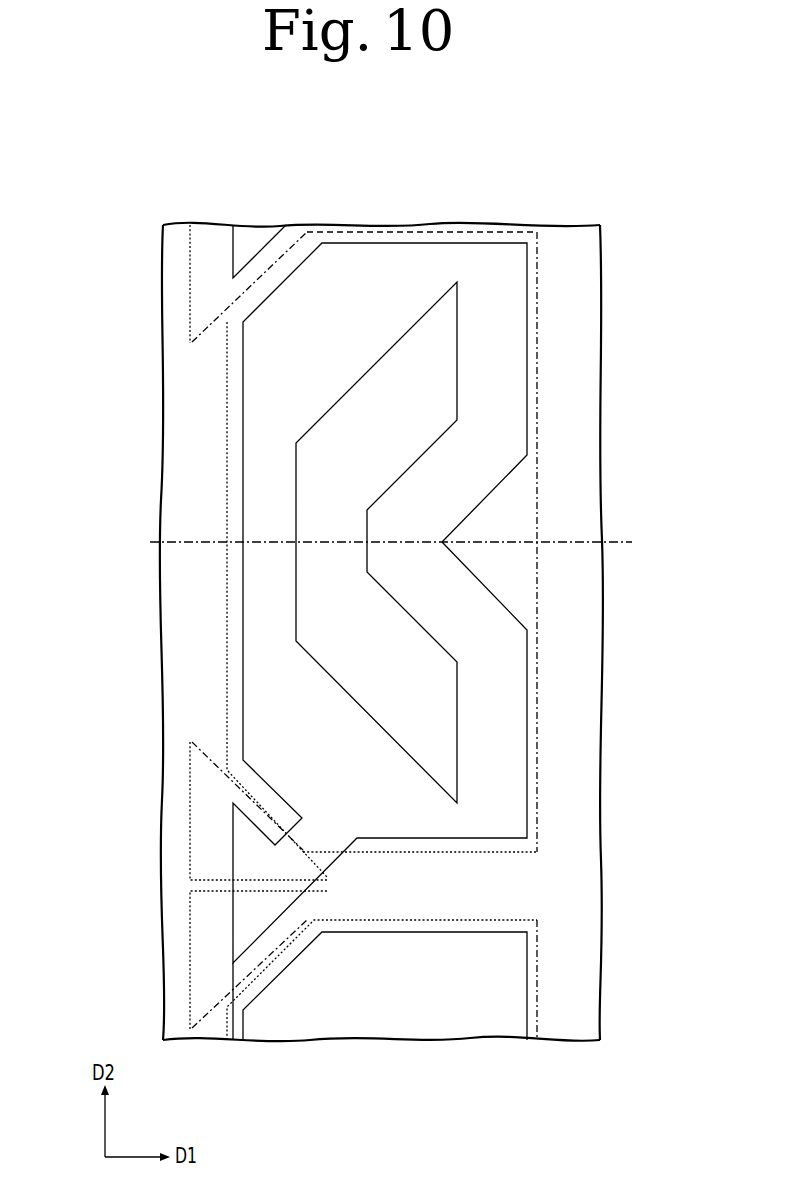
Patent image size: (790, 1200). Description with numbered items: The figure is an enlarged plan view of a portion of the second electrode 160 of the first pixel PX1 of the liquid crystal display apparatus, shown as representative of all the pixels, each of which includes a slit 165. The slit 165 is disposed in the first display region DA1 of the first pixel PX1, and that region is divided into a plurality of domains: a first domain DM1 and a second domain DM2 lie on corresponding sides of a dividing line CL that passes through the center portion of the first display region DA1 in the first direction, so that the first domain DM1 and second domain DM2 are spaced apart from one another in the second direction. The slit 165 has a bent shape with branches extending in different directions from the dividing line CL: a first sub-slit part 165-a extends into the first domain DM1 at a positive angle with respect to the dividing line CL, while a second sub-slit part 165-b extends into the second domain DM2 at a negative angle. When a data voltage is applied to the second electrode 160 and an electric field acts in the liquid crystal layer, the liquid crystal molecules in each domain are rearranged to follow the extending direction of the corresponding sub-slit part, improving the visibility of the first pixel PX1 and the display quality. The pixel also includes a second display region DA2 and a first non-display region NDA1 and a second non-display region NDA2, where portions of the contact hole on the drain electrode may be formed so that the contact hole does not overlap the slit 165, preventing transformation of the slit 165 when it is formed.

The first pixel PX1 is at (548, 266).
The first domain DM1 is at (510, 337).
The second domain DM2 is at (510, 722).
The slit 165 is at (366, 632).
The first sub-slit part 165-a is at (360, 393).
The second sub-slit part 165-b is at (345, 668).
The second electrode 160 is at (265, 402).
The first display region DA1 is at (228, 458).
The second display region DA2 is at (227, 1015).
The first non-display region NDA1 is at (192, 812).
The second non-display region NDA2 is at (192, 955).
The dividing line CL is at (405, 542).